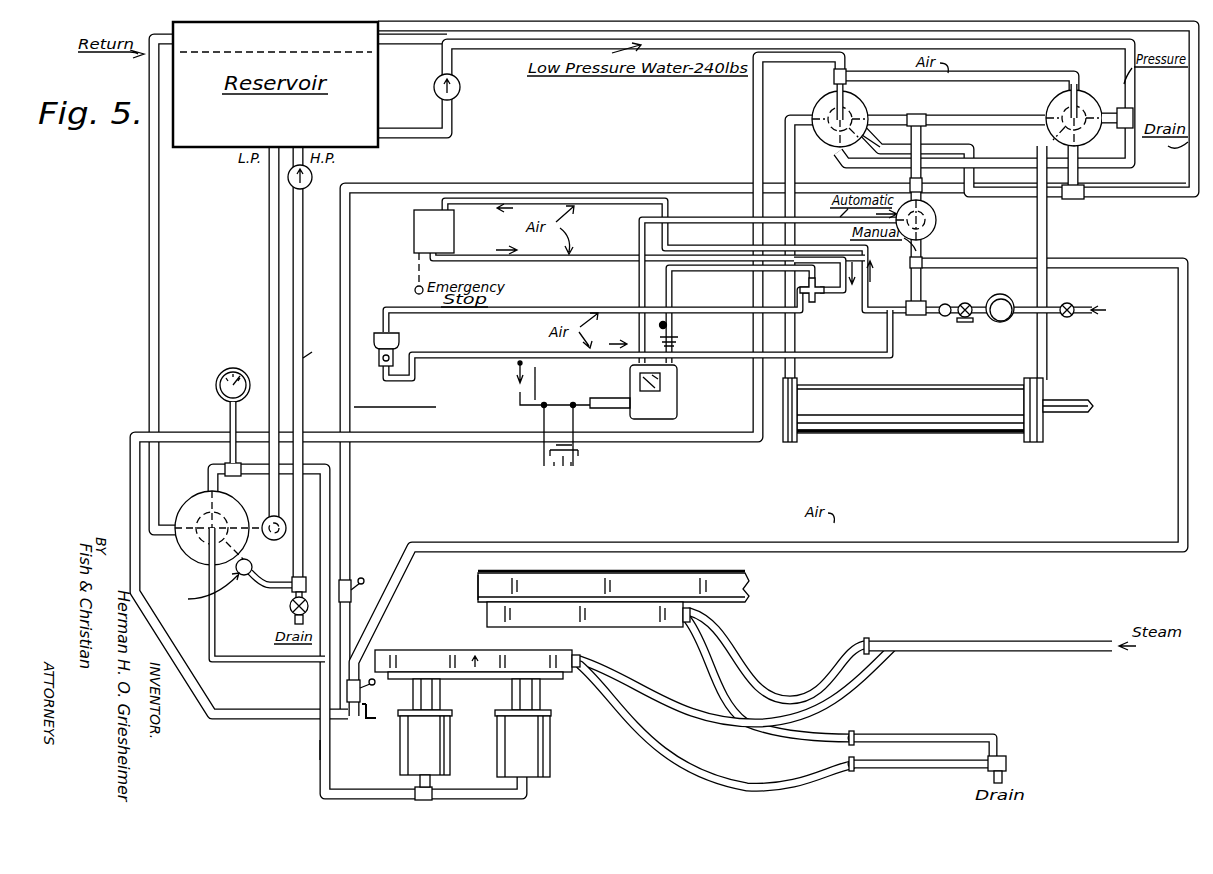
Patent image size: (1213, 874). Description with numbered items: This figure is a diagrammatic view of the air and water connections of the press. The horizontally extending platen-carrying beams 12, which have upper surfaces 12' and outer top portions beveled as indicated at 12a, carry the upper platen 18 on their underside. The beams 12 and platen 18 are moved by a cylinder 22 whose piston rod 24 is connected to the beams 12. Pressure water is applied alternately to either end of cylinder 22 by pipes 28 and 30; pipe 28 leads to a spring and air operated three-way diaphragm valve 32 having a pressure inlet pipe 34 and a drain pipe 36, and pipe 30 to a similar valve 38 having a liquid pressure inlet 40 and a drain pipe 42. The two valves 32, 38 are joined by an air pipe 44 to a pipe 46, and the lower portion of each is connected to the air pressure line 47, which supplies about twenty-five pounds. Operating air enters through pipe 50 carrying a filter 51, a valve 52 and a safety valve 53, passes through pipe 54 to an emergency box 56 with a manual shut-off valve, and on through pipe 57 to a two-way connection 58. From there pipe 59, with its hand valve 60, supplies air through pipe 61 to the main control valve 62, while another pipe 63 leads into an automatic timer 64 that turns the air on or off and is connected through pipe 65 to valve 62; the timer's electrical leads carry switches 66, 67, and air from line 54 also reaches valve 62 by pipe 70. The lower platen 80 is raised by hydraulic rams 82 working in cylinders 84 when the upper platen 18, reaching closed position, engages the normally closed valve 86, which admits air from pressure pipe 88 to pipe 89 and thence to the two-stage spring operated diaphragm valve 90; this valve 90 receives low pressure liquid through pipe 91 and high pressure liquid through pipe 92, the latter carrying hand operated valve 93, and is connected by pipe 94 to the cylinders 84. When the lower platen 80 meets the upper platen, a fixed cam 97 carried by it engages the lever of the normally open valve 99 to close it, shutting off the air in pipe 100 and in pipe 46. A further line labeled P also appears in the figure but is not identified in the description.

The platen-carrying beams 12 is at (633, 586).
The beveled portion 12a is at (480, 579).
The upper surfaces 12' is at (610, 565).
The upper platen 18 is at (646, 617).
The cylinder 22 is at (918, 415).
The piston rod 24 is at (1066, 407).
The pressure pipe 28 is at (797, 372).
The pressure pipe 30 is at (1048, 361).
The three-way diaphragm valve 32 is at (828, 107).
The pressure inlet pipe 34 is at (509, 47).
The pressure release or drain pipe 36 is at (866, 135).
The valve 38 is at (1076, 107).
The liquid pressure inlet 40 is at (1112, 116).
The pressure release or drain pipe 42 is at (1084, 192).
The air pipe 44 is at (1005, 78).
The pipe 46 is at (754, 98).
The air pressure line 47 is at (937, 117).
The pipe 50 is at (1088, 295).
The filter 51 is at (1012, 291).
The valve 52 is at (975, 293).
The safety valve 53 is at (944, 317).
The pipe 54 is at (590, 199).
The emergency box 56 is at (446, 243).
The pipe 57 is at (625, 264).
The two-way connection 58 is at (814, 297).
The pipe 59 is at (550, 307).
The hand valve 60 is at (400, 346).
The pipe 61 is at (496, 351).
The main control valve 62 is at (937, 223).
The pipe 63 is at (731, 271).
The automatic timer 64 is at (653, 392).
The pipe 65 is at (706, 222).
The switch 66 is at (516, 393).
The switch 67 is at (558, 469).
The pipe 70 is at (925, 298).
The lower platen 80 is at (418, 652).
The hydraulic rams 82 is at (512, 691).
The cylinders 84 is at (518, 741).
The valve 86 is at (352, 581).
The pressure pipe 88 is at (526, 185).
The pipe 89 is at (213, 629).
The two-stage diaphragm valve 90 is at (203, 491).
The pipe 91 is at (267, 282).
The pipe 92 is at (303, 300).
The hand operated valve 93 is at (313, 186).
The pipe 94 is at (219, 466).
The fixed cam 97 is at (362, 720).
The normally open valve 99 is at (347, 690).
The pipe 100 is at (925, 544).
The pipe P is at (319, 746).